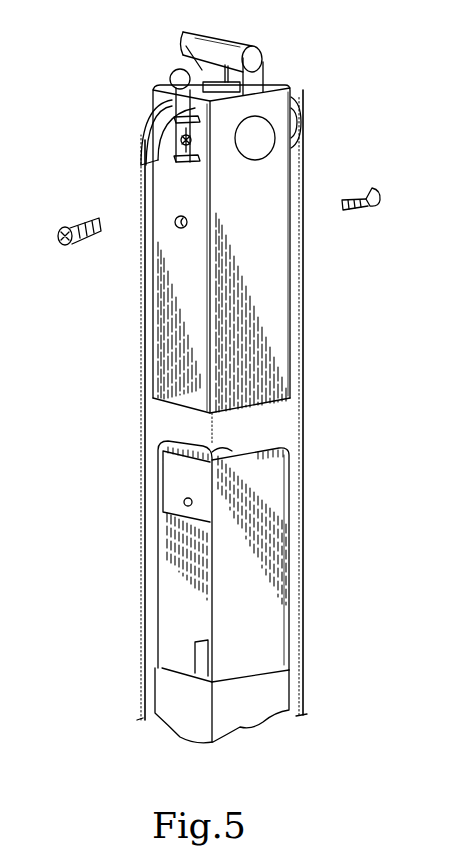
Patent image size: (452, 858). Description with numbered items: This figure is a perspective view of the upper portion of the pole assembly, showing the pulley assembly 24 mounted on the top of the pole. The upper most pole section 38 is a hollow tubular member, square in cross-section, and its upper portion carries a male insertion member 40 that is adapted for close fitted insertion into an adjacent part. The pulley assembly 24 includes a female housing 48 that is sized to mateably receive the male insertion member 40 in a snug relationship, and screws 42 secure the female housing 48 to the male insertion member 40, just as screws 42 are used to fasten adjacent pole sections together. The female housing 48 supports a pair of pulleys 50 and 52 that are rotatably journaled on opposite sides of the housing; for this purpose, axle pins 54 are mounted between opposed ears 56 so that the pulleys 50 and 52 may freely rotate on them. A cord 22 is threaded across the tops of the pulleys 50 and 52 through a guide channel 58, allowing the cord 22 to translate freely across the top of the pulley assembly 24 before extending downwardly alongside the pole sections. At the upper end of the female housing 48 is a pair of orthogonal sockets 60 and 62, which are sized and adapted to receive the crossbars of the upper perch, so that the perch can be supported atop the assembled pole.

The cord 22 is at (143, 428).
The pulley assembly 24 is at (267, 276).
The upper most pole section 38 is at (177, 698).
The male insertion member 40 is at (265, 565).
The screws 42 is at (88, 222).
The female housing 48 is at (283, 175).
The pulley 50 is at (148, 138).
The pulley 52 is at (300, 110).
The axle pins 54 is at (190, 142).
The ears 56 is at (170, 156).
The guide channel 58 is at (172, 86).
The socket 60 is at (238, 40).
The socket 62 is at (186, 40).